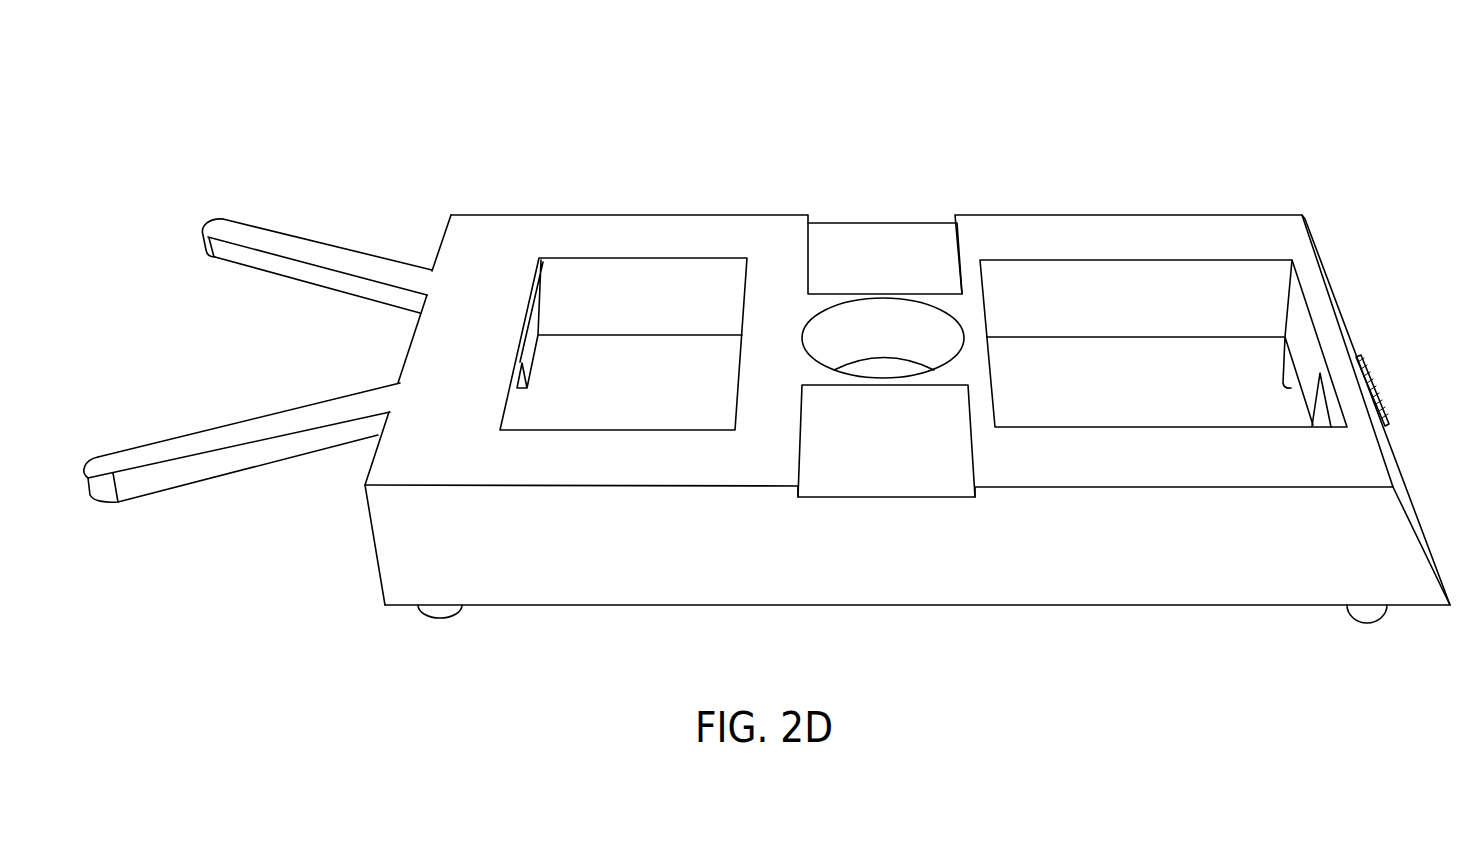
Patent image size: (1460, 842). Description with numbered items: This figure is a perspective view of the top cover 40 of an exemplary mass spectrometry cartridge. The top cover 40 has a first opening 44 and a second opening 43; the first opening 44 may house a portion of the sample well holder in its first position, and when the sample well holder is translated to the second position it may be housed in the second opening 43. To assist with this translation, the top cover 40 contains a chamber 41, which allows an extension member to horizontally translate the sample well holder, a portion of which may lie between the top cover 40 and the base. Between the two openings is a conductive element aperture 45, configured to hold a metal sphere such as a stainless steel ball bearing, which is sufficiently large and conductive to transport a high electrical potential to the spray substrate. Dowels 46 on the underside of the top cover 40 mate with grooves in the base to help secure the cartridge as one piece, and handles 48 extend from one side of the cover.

The top cover 40 is at (258, 122).
The chamber 41 is at (1312, 409).
The second opening 43 is at (629, 350).
The first opening 44 is at (1050, 350).
The conductive element aperture 45 is at (873, 327).
The dowels 46 is at (440, 610).
The handles 48 is at (326, 255).